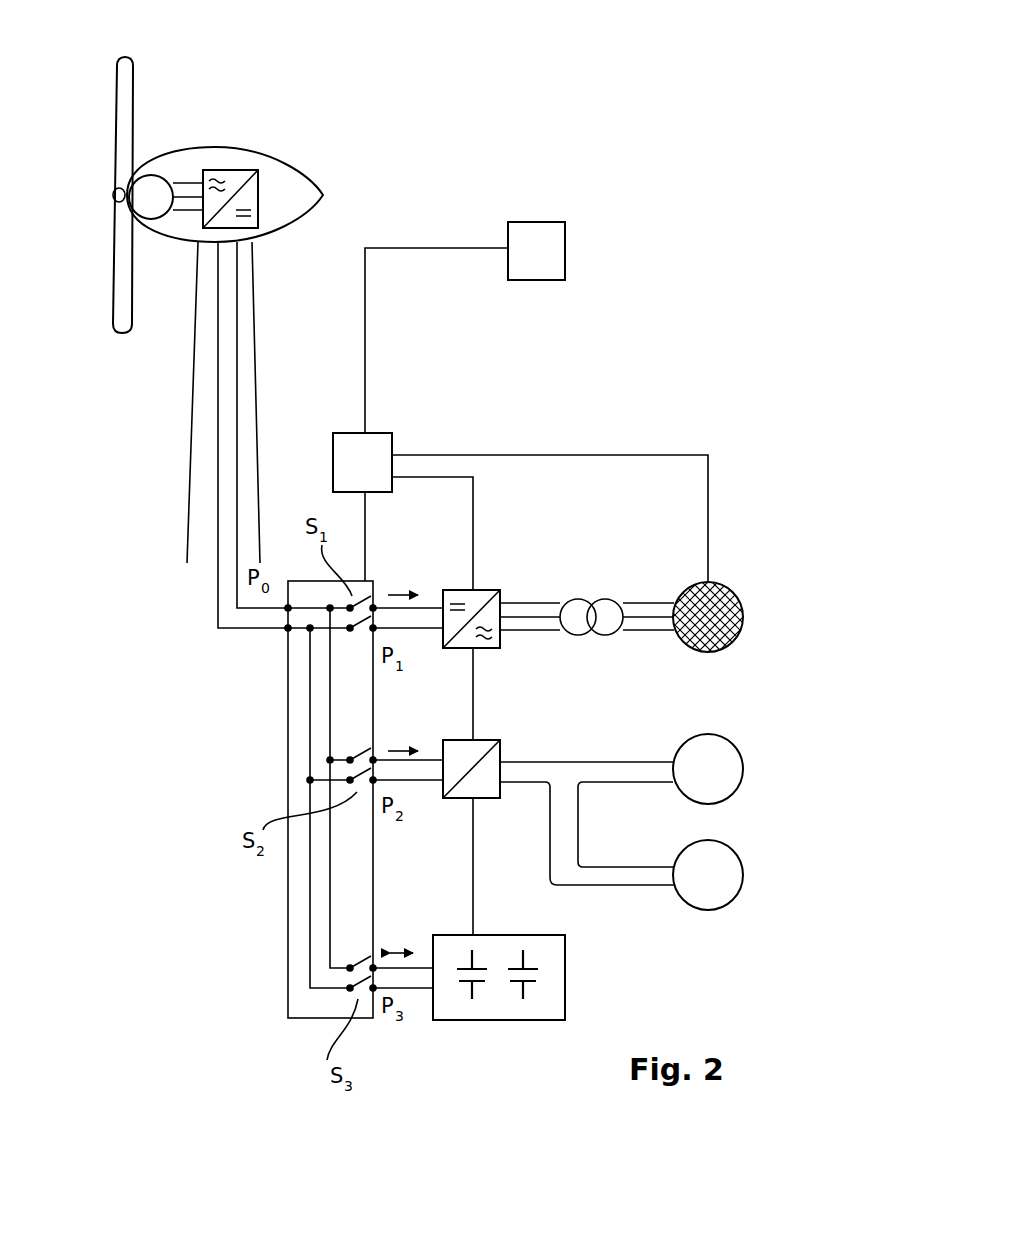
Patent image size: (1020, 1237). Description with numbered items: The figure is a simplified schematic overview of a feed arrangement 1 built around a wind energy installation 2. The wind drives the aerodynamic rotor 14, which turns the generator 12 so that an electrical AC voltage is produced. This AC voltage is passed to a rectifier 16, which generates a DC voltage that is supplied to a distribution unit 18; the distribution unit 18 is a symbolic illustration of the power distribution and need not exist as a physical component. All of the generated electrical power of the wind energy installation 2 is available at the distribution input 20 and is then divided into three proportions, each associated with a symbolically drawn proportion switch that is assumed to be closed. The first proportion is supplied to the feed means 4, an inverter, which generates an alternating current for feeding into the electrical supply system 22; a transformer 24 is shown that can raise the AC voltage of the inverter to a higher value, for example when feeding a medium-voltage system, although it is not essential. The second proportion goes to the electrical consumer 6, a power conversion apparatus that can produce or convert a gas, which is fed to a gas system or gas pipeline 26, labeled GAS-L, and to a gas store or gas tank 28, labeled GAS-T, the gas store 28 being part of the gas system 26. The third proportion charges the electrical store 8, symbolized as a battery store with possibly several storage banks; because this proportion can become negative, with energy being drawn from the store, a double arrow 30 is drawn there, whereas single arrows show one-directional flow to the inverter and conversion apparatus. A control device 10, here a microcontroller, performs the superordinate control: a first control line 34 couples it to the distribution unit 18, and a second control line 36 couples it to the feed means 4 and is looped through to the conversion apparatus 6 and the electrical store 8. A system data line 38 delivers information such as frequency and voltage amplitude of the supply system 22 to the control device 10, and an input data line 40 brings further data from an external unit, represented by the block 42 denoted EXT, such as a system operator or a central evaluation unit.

The feed arrangement 1 is at (404, 103).
The wind energy installation 2 is at (296, 113).
The feed means 4 is at (490, 590).
The electrical consumer 6 is at (490, 742).
The electrical store 8 is at (518, 945).
The control device 10 is at (378, 442).
The generator 12 is at (158, 172).
The aerodynamic rotor 14 is at (146, 68).
The rectifier 16 is at (233, 170).
The distribution unit 18 is at (288, 734).
The distribution input 20 is at (265, 645).
The electrical supply system 22 is at (715, 592).
The transformer 24 is at (585, 602).
The gas system 26 is at (720, 738).
The gas store 28 is at (720, 844).
The double arrow 30 is at (400, 945).
The first control line 34 is at (365, 535).
The second control line 36 is at (478, 524).
The system data line 38 is at (525, 455).
The input data line 40 is at (365, 340).
The block EXT 42 is at (535, 230).